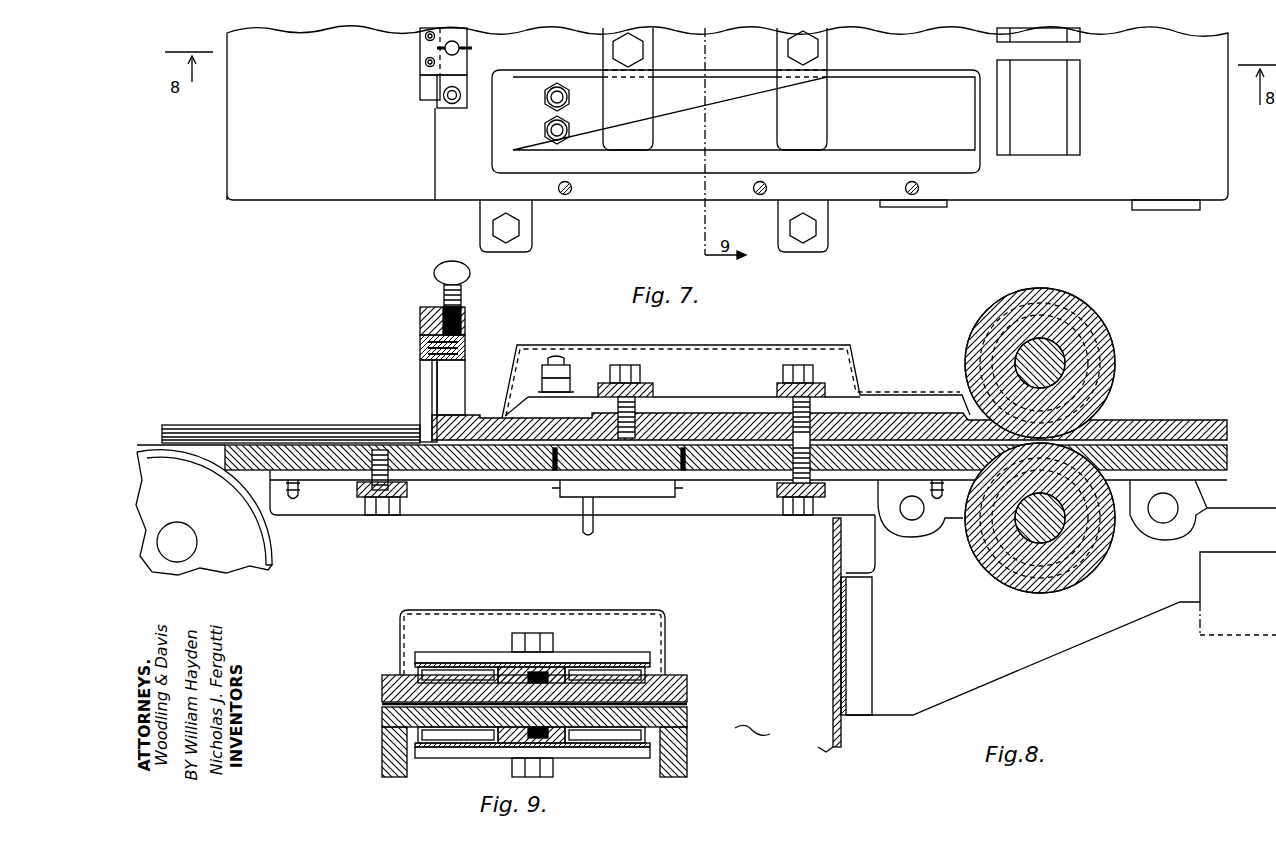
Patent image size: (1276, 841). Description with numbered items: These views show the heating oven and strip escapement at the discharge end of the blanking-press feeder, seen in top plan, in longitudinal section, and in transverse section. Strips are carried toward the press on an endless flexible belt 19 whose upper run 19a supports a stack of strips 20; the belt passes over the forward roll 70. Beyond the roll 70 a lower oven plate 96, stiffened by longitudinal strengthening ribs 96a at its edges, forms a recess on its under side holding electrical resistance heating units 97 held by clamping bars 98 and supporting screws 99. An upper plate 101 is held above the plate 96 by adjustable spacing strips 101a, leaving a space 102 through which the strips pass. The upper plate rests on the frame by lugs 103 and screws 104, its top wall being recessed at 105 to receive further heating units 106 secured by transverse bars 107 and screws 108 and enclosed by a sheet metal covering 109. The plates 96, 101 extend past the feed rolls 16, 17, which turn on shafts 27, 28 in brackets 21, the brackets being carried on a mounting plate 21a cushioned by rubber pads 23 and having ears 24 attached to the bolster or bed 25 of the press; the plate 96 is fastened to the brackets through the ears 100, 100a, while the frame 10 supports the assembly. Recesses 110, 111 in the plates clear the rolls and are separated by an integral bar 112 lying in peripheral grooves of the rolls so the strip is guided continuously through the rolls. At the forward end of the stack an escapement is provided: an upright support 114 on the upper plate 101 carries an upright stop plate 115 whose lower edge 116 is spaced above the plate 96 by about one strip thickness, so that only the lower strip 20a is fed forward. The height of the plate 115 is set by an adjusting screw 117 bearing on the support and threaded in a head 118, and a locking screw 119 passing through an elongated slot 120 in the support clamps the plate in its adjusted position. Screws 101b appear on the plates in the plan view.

In FIG. 8, the frame 10 is at (842, 738).
In FIG. 8, the lower feed roll 16 is at (1012, 595).
In FIG. 8, the upper feed roll 17 is at (1080, 302).
In FIG. 8, the endless flexible belt 19 is at (280, 533).
In FIG. 8, the upper run of the belt 19a is at (144, 445).
In FIG. 8, the stack of strips 20 is at (283, 430).
In FIG. 8, the lower strip 20a is at (345, 441).
In FIG. 8, the brackets 21 is at (1036, 660).
In FIG. 8, the mounting plate 21a is at (873, 634).
In FIG. 8, the rubber pads 23 is at (846, 667).
In FIG. 8, the ears or lugs 24 is at (1241, 498).
In FIG. 8, the bolster or bed of the press 25 is at (1222, 640).
In FIG. 8, the shaft of the lower roll 27 is at (1045, 588).
In FIG. 8, the shaft of the upper roll 28 is at (1058, 363).
In FIG. 8, the forward belt roll 70 is at (262, 549).
In FIG. 8, the lower oven plate 96 is at (513, 470).
In FIG. 9, the lower oven plate 96 is at (690, 720).
In FIG. 8, the longitudinal strengthening ribs 96a is at (660, 493).
In FIG. 9, the longitudinal strengthening ribs 96a is at (386, 752).
In FIG. 8, the electrical resistance heating units 97 is at (750, 480).
In FIG. 9, the electrical resistance heating units 97 is at (445, 758).
In FIG. 8, the clamping bars 98 is at (408, 490).
In FIG. 9, the clamping bars 98 is at (478, 758).
In FIG. 8, the supporting screws 99 is at (387, 518).
In FIG. 9, the supporting screws 99 is at (555, 770).
In FIG. 8, the ear 100 is at (1158, 537).
In FIG. 8, the ear 100a is at (912, 537).
In FIG. 7, the upper plate 101 is at (453, 204).
In FIG. 8, the upper plate 101 is at (862, 410).
In FIG. 9, the upper plate 101 is at (393, 689).
In FIG. 9, the adjustable spacing strips 101a is at (692, 702).
In FIG. 7, the screw 101b is at (569, 196).
In FIG. 8, the space 102 is at (735, 420).
In FIG. 9, the space 102 is at (420, 708).
In FIG. 7, the lugs 103 is at (522, 245).
In FIG. 7, the screws 104 is at (515, 228).
In FIG. 7, the recess 105 is at (648, 178).
In FIG. 9, the recess 105 is at (658, 680).
In FIG. 7, the electrical resistance heating units 106 is at (905, 88).
In FIG. 8, the electrical resistance heating units 106 is at (699, 402).
In FIG. 9, the electrical resistance heating units 106 is at (450, 668).
In FIG. 7, the transverse bars 107 is at (645, 115).
In FIG. 8, the transverse bars 107 is at (645, 392).
In FIG. 9, the transverse bars 107 is at (583, 660).
In FIG. 7, the screws 108 is at (642, 54).
In FIG. 8, the screws 108 is at (640, 375).
In FIG. 9, the screws 108 is at (548, 650).
In FIG. 8, the sheet metal covering 109 is at (795, 346).
In FIG. 9, the sheet metal covering 109 is at (655, 603).
In FIG. 8, the recess for the rolls 110 is at (1092, 495).
In FIG. 7, the recess for the rolls 111 is at (1075, 62).
In FIG. 8, the recess for the rolls 111 is at (1103, 418).
In FIG. 7, the integral bar 112 is at (1038, 62).
In FIG. 7, the upright support 114 is at (457, 108).
In FIG. 8, the upright support 114 is at (466, 378).
In FIG. 7, the upright stop plate 115 is at (420, 88).
In FIG. 8, the upright stop plate 115 is at (420, 378).
In FIG. 8, the lower edge of the stop plate 116 is at (428, 420).
In FIG. 7, the adjusting screw 117 is at (476, 49).
In FIG. 8, the adjusting screw 117 is at (468, 282).
In FIG. 7, the head 118 is at (420, 48).
In FIG. 8, the head 118 is at (440, 310).
In FIG. 8, the locking screw 119 is at (466, 352).
In FIG. 8, the elongated slot 120 is at (453, 400).